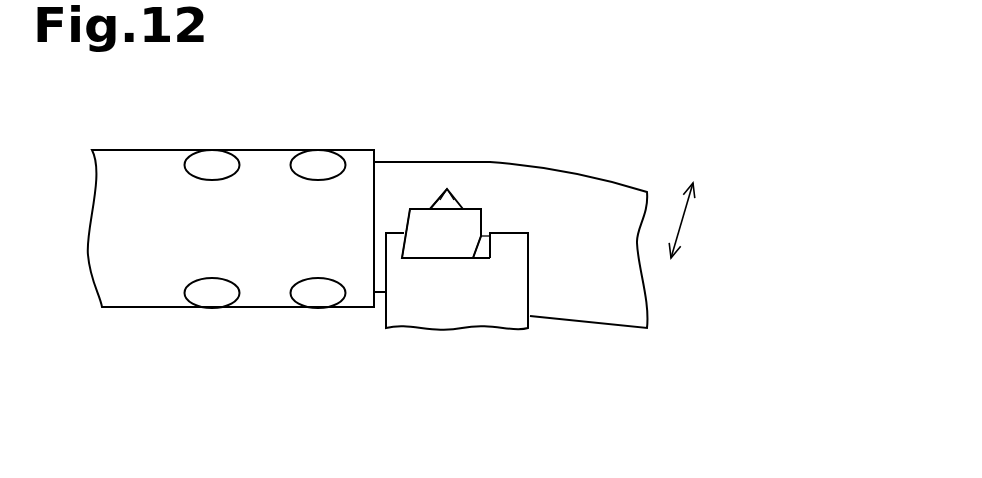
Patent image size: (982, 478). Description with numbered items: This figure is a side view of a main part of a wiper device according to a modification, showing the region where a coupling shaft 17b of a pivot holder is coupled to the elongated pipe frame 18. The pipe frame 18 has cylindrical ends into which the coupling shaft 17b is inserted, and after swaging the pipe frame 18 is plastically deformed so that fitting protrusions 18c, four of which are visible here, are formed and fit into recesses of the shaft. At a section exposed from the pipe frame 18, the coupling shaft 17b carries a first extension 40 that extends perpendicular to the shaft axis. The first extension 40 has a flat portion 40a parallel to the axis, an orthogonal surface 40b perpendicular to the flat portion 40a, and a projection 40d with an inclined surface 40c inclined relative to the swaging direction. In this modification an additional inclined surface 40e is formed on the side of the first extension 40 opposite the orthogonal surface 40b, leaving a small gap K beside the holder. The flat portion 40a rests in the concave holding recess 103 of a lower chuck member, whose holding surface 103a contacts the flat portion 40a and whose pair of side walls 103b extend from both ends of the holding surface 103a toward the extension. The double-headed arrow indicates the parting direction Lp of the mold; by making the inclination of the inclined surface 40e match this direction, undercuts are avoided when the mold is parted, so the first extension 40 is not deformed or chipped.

The pipe frame 18 is at (100, 218).
The fitting protrusions 18c is at (189, 167).
The coupling shaft 17b is at (604, 318).
The holding recess 103 is at (488, 328).
The holding surface 103a is at (429, 258).
The side walls 103b is at (386, 235).
The first extension 40 is at (453, 258).
The flat portion 40a is at (466, 258).
The orthogonal surface 40b is at (401, 246).
The inclined surface 40c is at (438, 204).
The projection 40d is at (451, 201).
The inclined surface 40e is at (490, 250).
The gap K is at (483, 241).
The parting direction Lp is at (686, 216).